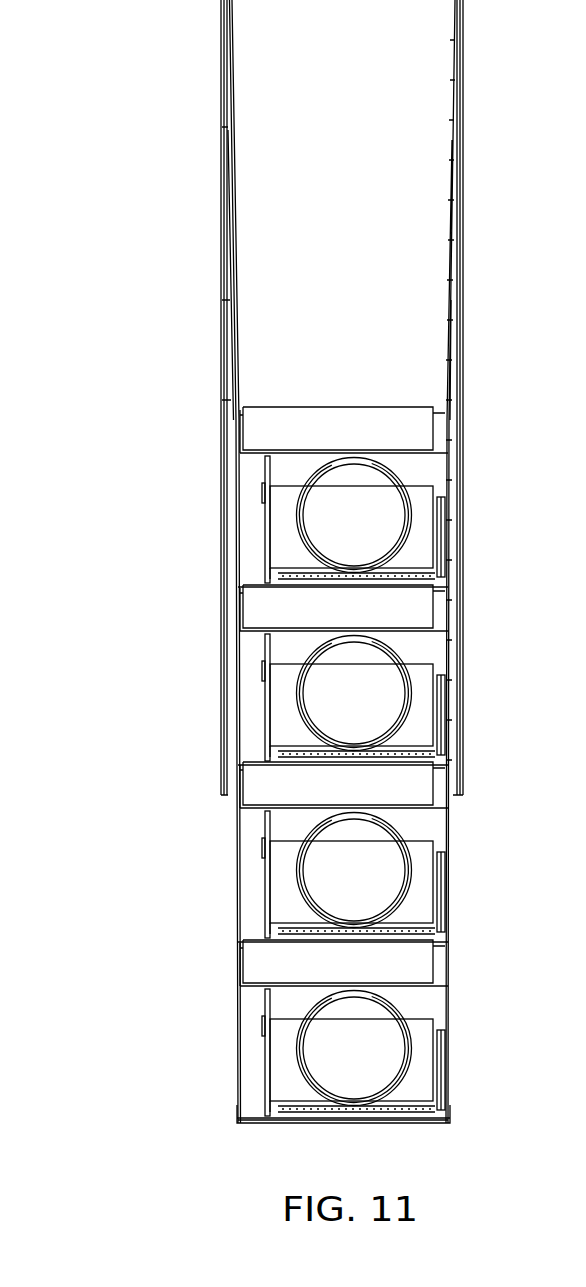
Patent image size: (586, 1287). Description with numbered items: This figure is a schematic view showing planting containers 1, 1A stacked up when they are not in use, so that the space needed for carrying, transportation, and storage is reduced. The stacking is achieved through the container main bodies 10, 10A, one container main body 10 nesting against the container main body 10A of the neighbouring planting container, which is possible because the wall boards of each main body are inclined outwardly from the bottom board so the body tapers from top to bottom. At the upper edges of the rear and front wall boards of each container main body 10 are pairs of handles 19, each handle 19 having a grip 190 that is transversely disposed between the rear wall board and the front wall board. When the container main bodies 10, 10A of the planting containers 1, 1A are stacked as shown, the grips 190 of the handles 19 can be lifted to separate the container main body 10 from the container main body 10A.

The planting container 1 is at (202, 1076).
The planting container 1A is at (233, 892).
The container main body 10 is at (237, 1018).
The container main body 10A is at (232, 925).
The handle 19 is at (222, 752).
The grip 190 is at (223, 793).